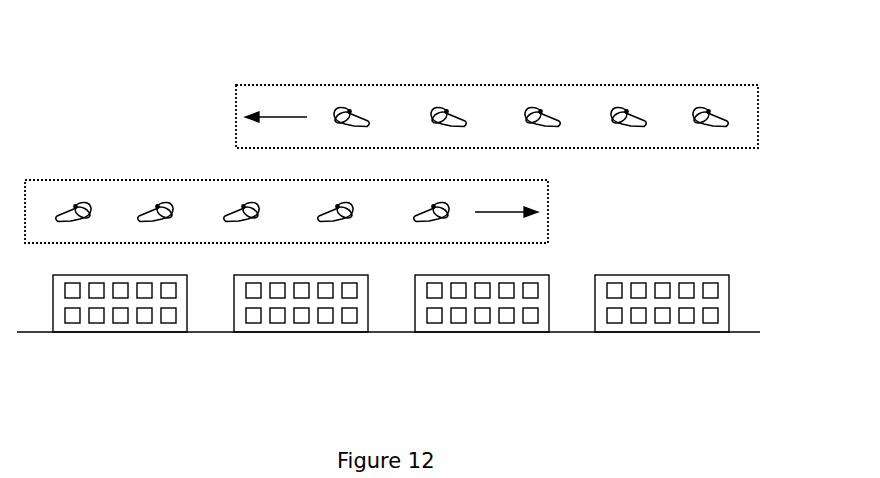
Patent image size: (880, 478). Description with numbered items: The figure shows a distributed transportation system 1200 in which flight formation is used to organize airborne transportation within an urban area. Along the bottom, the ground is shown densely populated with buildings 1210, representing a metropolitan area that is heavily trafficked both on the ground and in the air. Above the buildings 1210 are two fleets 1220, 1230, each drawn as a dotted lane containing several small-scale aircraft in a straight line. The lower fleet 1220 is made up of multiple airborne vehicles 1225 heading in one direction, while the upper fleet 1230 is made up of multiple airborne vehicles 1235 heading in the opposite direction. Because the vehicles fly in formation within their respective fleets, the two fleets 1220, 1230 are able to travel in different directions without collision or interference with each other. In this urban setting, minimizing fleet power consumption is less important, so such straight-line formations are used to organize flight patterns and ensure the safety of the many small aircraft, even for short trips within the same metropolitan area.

The distributed transportation system 1200 is at (430, 422).
The buildings 1210 is at (237, 322).
The fleet 1220 is at (548, 220).
The airborne vehicle 1225 is at (158, 208).
The fleet 1230 is at (237, 107).
The airborne vehicle 1235 is at (530, 112).